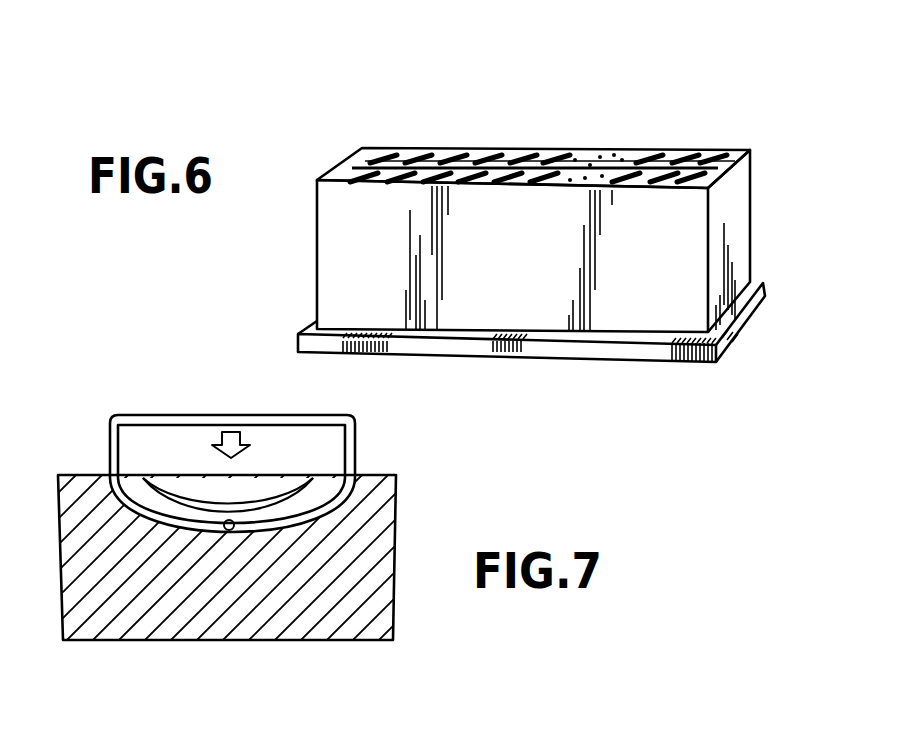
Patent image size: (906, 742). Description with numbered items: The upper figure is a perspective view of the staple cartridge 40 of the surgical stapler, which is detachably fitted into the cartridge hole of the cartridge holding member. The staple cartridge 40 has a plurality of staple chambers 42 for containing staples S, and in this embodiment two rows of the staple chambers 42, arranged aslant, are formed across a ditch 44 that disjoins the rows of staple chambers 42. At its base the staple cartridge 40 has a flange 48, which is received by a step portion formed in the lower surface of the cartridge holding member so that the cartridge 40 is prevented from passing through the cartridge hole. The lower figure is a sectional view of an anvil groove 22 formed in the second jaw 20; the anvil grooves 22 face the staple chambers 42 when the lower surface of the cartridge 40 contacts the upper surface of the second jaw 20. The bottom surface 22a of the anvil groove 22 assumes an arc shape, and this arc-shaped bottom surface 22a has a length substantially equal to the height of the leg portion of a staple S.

In FIG. 6, the staple cartridge 40 is at (340, 253).
In FIG. 6, the staple chambers 42 is at (438, 160).
In FIG. 6, the ditch 44 is at (362, 162).
In FIG. 6, the flange 48 is at (653, 352).
In FIG. 7, the staple S is at (143, 420).
In FIG. 7, the second jaw 20 is at (293, 623).
In FIG. 7, the anvil groove 22 is at (260, 488).
In FIG. 7, the bottom surface of the anvil groove 22a is at (233, 530).